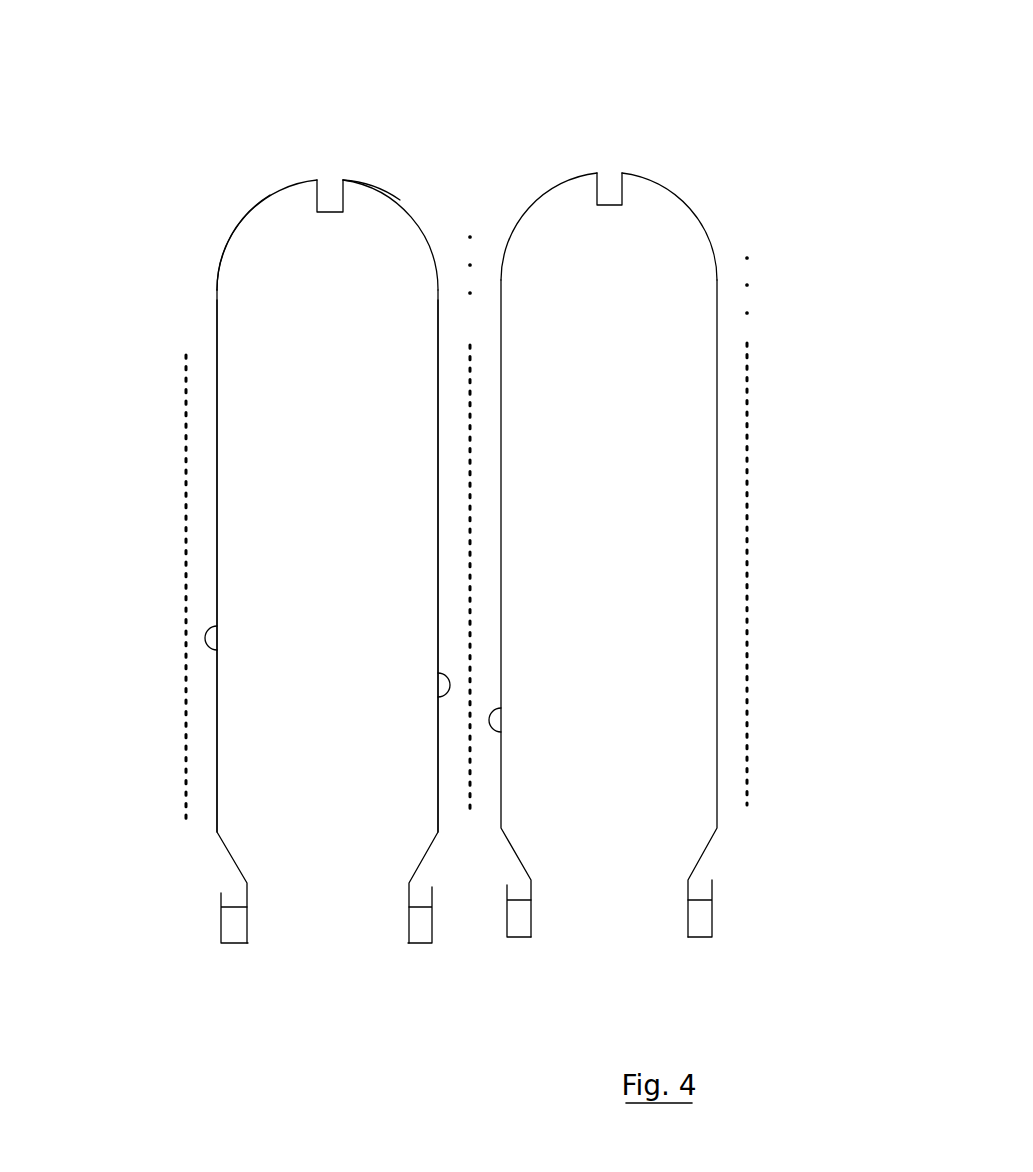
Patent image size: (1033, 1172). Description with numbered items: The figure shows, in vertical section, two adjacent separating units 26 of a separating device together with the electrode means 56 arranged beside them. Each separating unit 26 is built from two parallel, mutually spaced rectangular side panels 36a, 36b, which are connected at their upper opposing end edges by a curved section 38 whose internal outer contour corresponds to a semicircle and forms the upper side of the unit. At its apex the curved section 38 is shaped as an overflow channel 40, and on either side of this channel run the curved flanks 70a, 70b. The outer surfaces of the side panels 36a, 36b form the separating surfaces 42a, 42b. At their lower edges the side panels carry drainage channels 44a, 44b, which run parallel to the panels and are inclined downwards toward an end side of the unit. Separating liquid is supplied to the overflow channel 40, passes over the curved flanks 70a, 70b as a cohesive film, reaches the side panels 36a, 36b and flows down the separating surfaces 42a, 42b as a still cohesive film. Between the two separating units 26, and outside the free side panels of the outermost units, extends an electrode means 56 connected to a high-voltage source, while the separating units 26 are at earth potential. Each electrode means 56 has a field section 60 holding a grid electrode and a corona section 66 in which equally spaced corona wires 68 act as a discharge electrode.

The separating unit 26 is at (394, 134).
The side panel 36a is at (218, 453).
The side panel 36b is at (437, 505).
The curved section 38 is at (397, 188).
The overflow channel 40 is at (328, 190).
The separating surface 42a is at (222, 626).
The separating surface 42b is at (437, 696).
The drainage channel 44a is at (236, 913).
The drainage channel 44b is at (420, 913).
The electrode means 56 is at (165, 231).
The field section 60 is at (143, 600).
The corona section 66 is at (186, 548).
The corona wire 68 is at (190, 300).
The curved flank 70a is at (243, 213).
The curved flank 70b is at (358, 180).